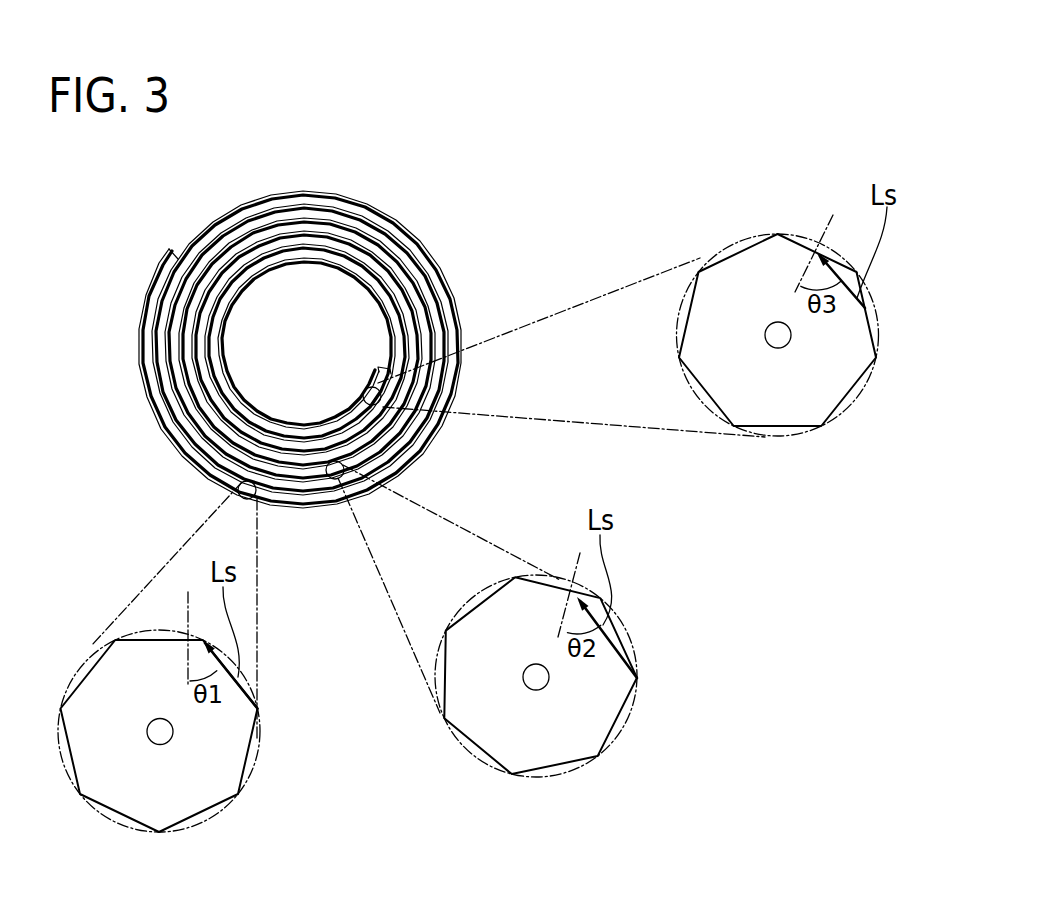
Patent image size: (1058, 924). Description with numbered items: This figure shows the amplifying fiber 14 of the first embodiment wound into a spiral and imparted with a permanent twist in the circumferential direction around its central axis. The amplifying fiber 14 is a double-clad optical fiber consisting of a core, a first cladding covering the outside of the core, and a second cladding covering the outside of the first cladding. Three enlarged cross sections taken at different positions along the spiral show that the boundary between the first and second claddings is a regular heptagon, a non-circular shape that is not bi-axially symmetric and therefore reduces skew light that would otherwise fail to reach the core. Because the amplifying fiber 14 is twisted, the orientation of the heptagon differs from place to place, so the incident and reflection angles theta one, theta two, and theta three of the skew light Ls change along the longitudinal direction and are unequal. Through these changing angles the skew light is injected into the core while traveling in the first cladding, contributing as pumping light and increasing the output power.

The amplifying fiber 14 is at (383, 225).